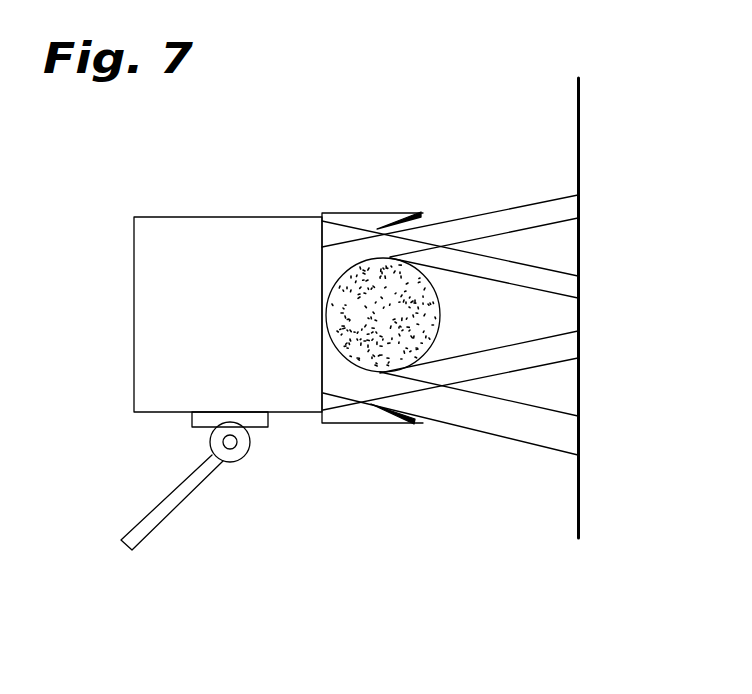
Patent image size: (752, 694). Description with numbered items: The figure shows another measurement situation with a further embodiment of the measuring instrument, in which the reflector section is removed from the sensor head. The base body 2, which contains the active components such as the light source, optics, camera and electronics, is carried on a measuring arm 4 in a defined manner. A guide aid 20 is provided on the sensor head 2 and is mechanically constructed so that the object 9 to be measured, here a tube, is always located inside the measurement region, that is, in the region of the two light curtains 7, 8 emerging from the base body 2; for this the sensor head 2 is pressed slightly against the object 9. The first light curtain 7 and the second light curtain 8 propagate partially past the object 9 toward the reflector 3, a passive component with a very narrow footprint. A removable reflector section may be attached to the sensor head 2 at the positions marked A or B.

The base body 2 is at (148, 315).
The reflector 3 is at (578, 507).
The measuring arm 4 is at (160, 508).
The first light curtain 7 is at (552, 207).
The second light curtain 8 is at (557, 425).
The object to be measured 9 is at (392, 288).
The guide aid 20 is at (385, 226).